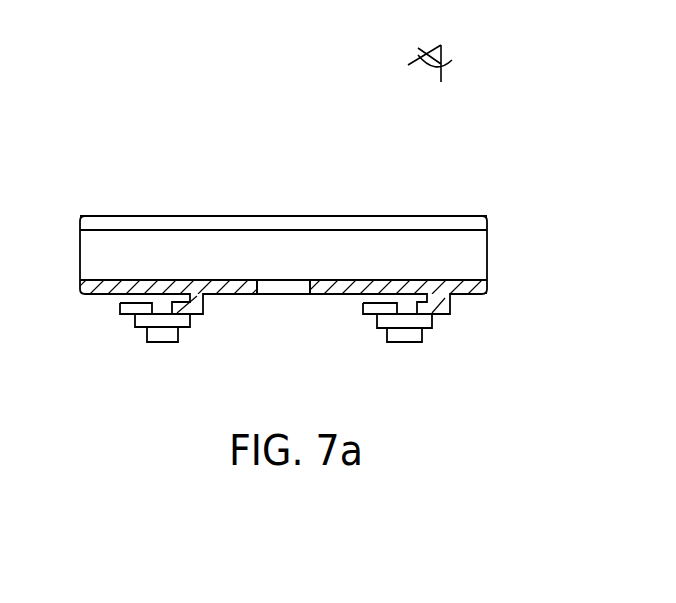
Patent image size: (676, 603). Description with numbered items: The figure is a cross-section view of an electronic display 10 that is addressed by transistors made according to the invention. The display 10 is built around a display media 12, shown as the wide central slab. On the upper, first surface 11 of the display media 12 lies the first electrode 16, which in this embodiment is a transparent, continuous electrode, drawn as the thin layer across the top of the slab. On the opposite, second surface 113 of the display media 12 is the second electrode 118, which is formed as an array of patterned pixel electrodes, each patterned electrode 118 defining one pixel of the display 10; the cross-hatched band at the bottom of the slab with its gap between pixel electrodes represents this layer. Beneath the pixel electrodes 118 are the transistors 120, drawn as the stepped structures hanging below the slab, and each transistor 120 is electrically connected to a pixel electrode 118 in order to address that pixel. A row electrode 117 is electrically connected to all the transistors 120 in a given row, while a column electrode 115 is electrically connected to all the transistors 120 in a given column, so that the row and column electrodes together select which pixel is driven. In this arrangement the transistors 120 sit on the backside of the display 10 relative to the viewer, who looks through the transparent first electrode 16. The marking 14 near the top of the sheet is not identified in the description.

The electronic display 10 is at (512, 177).
The first surface 11 is at (232, 228).
The display media 12 is at (183, 234).
The light source 14 is at (458, 30).
The first electrode 16 is at (378, 224).
The second surface 113 is at (85, 283).
The column electrode 115 is at (122, 310).
The row electrode 117 is at (166, 343).
The second electrode / patterned pixel electrode 118 is at (247, 290).
The transistor 120 is at (146, 320).